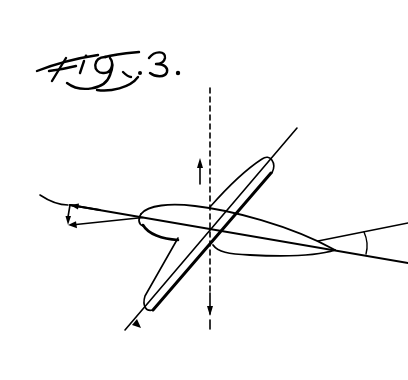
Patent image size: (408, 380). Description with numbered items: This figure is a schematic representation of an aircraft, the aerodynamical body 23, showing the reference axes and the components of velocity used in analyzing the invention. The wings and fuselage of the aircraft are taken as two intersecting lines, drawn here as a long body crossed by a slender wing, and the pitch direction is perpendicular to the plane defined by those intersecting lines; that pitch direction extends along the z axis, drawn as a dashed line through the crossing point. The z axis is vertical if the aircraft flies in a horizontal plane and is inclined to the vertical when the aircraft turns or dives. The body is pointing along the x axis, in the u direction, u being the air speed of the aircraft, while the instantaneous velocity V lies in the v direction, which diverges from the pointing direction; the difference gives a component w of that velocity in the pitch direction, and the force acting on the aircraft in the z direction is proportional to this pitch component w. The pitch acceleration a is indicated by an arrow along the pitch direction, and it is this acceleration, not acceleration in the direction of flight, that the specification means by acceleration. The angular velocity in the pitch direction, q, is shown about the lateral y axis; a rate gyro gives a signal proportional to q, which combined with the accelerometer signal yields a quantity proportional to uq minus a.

The aircraft body 23 is at (267, 227).
The x axis x is at (214, 225).
The y axis y is at (259, 176).
The z axis z is at (208, 208).
The air speed u is at (90, 203).
The instantaneous velocity direction v is at (105, 230).
The pitch component of velocity w is at (138, 265).
The pitch acceleration a is at (197, 162).
The angular velocity in the pitch direction q is at (165, 289).